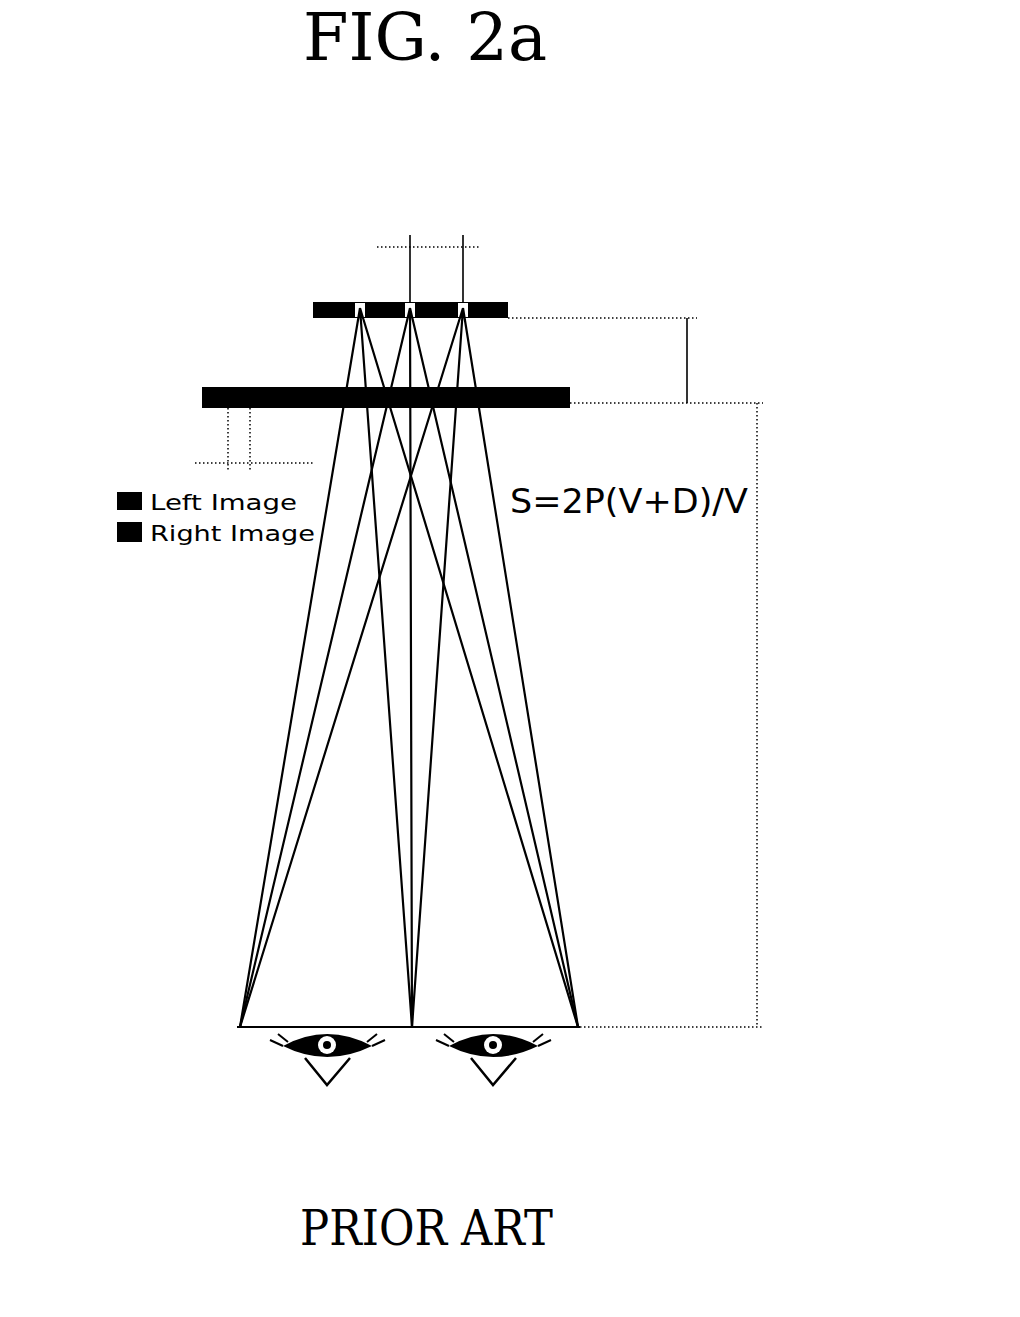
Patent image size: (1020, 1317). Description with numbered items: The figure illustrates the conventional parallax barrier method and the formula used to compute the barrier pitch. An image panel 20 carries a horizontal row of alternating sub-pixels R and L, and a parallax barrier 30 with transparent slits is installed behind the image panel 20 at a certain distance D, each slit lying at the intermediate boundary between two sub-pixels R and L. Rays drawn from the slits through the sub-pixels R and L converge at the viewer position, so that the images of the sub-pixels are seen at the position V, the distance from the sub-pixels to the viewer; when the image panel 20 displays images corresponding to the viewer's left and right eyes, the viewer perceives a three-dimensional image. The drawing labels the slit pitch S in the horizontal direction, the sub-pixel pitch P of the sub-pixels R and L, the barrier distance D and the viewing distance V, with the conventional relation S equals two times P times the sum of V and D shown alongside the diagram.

The image panel 20 is at (202, 403).
The parallax barrier 30 is at (508, 305).
The slit pitch S is at (447, 261).
The sub-pixel pitch P is at (254, 440).
The distance from sub-pixels to parallax barrier D is at (635, 360).
The viewing distance V is at (671, 715).
The left sub-pixel L is at (322, 1061).
The right sub-pixel R is at (506, 1061).